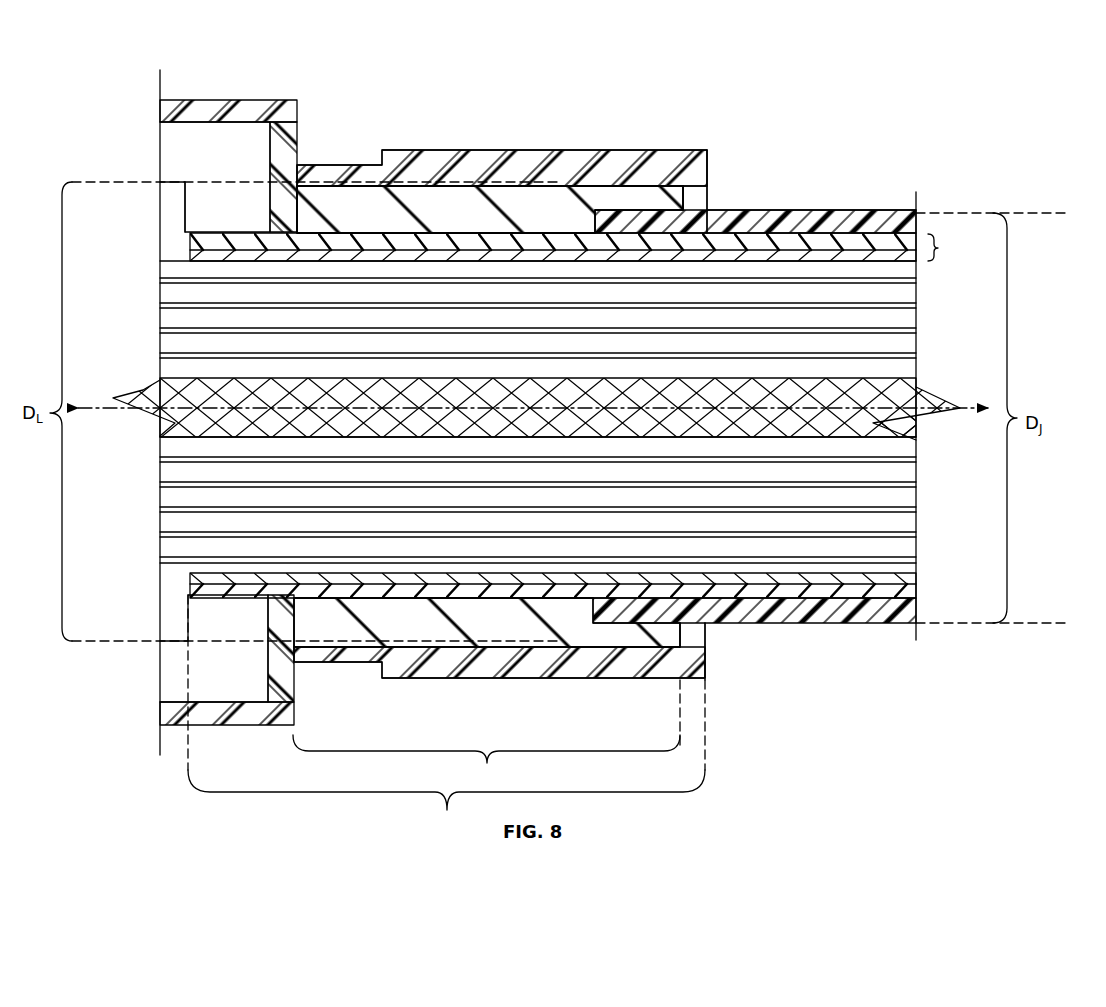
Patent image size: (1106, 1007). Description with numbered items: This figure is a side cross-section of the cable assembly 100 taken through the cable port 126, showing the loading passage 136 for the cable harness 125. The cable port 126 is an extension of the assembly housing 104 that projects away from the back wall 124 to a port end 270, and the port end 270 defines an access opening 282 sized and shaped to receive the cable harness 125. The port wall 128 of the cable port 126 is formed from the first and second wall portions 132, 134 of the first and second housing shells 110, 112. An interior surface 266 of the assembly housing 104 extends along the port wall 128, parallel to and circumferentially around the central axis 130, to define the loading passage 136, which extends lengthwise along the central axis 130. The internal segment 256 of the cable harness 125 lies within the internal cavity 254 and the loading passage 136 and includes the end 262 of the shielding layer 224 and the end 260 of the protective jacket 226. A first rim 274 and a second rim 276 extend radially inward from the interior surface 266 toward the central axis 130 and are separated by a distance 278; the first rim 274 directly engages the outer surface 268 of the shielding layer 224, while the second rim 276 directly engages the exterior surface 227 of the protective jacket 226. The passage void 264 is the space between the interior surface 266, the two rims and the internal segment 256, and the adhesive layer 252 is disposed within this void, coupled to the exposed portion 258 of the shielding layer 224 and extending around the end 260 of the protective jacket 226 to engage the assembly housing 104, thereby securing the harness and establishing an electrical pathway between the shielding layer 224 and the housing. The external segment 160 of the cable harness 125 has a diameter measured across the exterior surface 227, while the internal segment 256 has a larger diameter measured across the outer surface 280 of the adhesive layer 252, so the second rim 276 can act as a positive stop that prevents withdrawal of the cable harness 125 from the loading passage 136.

The cable assembly 100 is at (841, 85).
The assembly housing 104 is at (319, 71).
The first housing shell 110 is at (237, 89).
The second housing shell 112 is at (241, 743).
The back wall 124 is at (303, 137).
The cable harness 125 is at (859, 206).
The cable port 126 is at (681, 116).
The port wall 128 is at (563, 150).
The central axis 130 is at (976, 418).
The first wall portion 132 is at (410, 150).
The second wall portion 134 is at (405, 679).
The loading passage 136 is at (577, 196).
The external segment 160 is at (901, 650).
The shielding layer 224 is at (951, 249).
The protective jacket 226 is at (800, 625).
The exterior surface 227 is at (829, 206).
The adhesive layer 252 is at (527, 208).
The internal cavity 254 is at (258, 155).
The internal segment 256 is at (446, 717).
The exposed portion 258 is at (338, 646).
The end 260 is at (592, 610).
The end 262 is at (186, 587).
The passage void 264 is at (184, 206).
The interior surface 266 is at (467, 192).
The outer surface 268 is at (226, 600).
The port end 270 is at (717, 162).
The first rim 274 is at (282, 617).
The second rim 276 is at (693, 641).
The distance 278 is at (486, 736).
The outer surface 280 is at (437, 180).
The access opening 282 is at (719, 207).